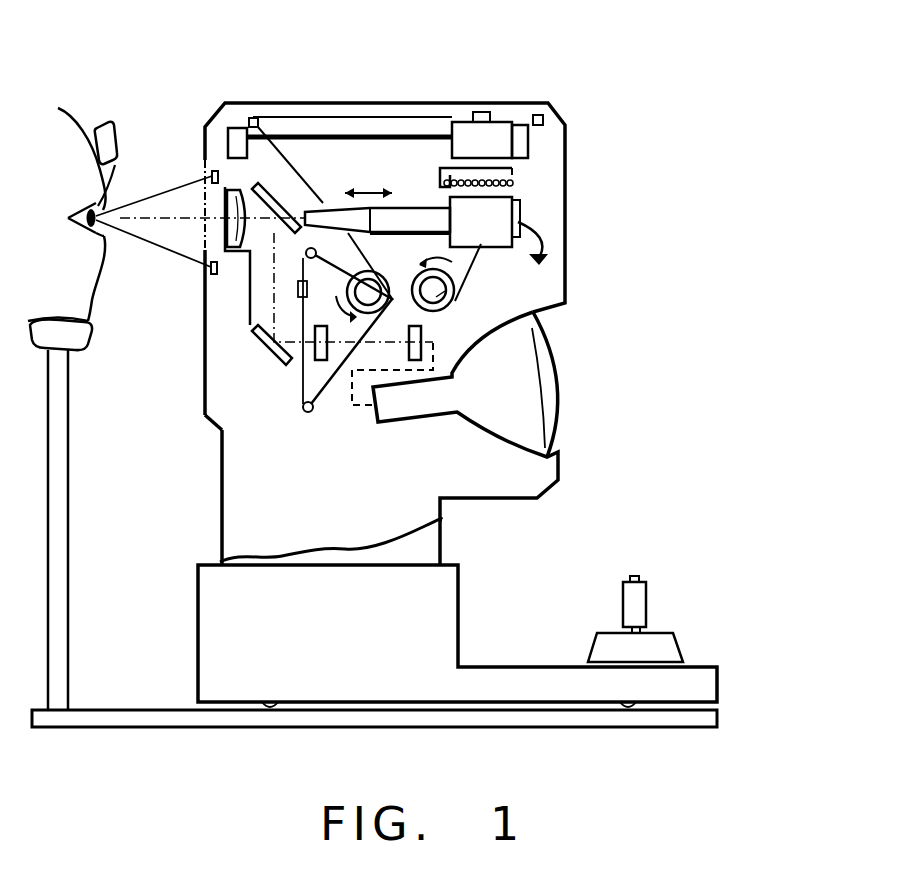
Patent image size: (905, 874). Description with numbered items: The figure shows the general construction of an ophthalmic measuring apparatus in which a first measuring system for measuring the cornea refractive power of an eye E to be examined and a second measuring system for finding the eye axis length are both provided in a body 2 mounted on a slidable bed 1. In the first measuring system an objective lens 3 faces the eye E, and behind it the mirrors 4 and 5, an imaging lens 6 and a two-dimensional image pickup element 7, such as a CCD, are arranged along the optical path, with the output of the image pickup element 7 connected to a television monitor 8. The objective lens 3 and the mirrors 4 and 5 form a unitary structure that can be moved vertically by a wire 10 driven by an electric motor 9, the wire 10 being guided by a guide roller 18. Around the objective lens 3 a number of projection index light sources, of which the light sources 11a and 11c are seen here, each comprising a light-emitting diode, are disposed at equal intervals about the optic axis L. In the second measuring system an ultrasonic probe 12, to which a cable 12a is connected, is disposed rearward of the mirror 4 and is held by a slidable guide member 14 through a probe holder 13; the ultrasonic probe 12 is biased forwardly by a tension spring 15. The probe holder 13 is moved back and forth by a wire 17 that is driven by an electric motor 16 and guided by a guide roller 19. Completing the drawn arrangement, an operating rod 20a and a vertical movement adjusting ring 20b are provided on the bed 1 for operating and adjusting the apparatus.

The slidable bed 1 is at (513, 680).
The body 2 is at (222, 380).
The objective lens 3 is at (224, 240).
The mirror 4 is at (282, 188).
The mirror 5 is at (213, 426).
The imaging lens 6 is at (345, 292).
The two-dimensional image pickup element 7 is at (417, 362).
The television monitor 8 is at (552, 387).
The electric motor 9 is at (262, 336).
The wire 10 is at (330, 385).
The projection index light source 11a is at (212, 172).
The projection index light source 11c is at (212, 273).
The ultrasonic probe 12 is at (420, 215).
The cable 12a is at (543, 253).
The probe holder 13 is at (505, 160).
The slidable guide member 14 is at (410, 140).
The tension spring 15 is at (512, 185).
The electric motor 16 is at (440, 297).
The wire 17 is at (355, 103).
The guide roller 18 is at (308, 413).
The guide roller 19 is at (253, 117).
The operating rod 20a is at (640, 603).
The vertical movement adjusting ring 20b is at (667, 645).
The eye to be examined E is at (115, 165).
The optic axis L is at (158, 216).